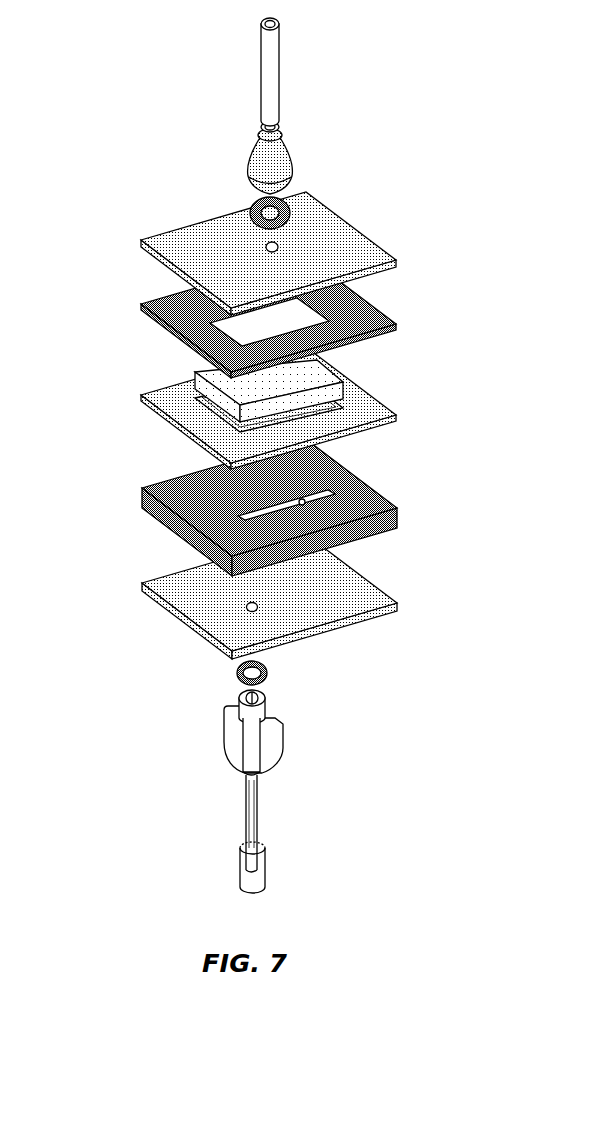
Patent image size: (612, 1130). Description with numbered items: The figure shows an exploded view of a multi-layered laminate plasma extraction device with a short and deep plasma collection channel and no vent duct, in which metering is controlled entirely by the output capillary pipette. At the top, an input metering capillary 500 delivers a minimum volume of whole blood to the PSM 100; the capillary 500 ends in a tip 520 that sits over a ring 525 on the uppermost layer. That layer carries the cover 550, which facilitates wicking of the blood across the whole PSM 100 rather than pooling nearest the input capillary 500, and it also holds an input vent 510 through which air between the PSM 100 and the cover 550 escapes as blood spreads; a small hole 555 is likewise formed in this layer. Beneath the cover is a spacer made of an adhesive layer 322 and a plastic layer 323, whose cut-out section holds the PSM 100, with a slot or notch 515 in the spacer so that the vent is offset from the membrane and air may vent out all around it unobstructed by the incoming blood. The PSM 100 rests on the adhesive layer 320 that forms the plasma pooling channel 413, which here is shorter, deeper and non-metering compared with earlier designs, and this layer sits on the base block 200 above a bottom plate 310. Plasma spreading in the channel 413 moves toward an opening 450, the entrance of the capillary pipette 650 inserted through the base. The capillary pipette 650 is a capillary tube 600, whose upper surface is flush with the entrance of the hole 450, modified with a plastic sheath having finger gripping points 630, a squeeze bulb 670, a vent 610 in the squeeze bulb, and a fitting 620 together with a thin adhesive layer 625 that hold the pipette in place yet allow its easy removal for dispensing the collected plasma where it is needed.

The input metering capillary 500 is at (275, 62).
The tip 520 is at (285, 157).
The washer 525 is at (290, 210).
The hole 555 is at (278, 247).
The input vent 510 is at (277, 253).
The cover 550 is at (183, 228).
The adhesive layer 322 is at (142, 306).
The plastic layer 323 is at (167, 403).
The slot or notch 515 is at (330, 406).
The PSM 100 is at (337, 370).
The plasma pooling channel 413 is at (338, 465).
The adhesive layer 320 is at (183, 498).
The base block 200 is at (235, 508).
The lower plate 310 is at (195, 602).
The opening 450 is at (258, 608).
The thin adhesive layer 625 is at (236, 672).
The capillary tube 600 is at (262, 693).
The fitting 620 is at (243, 718).
The finger gripping points 630 is at (270, 740).
The capillary pipette 650 is at (238, 793).
The squeeze bulb 670 is at (268, 871).
The vent 610 is at (250, 873).